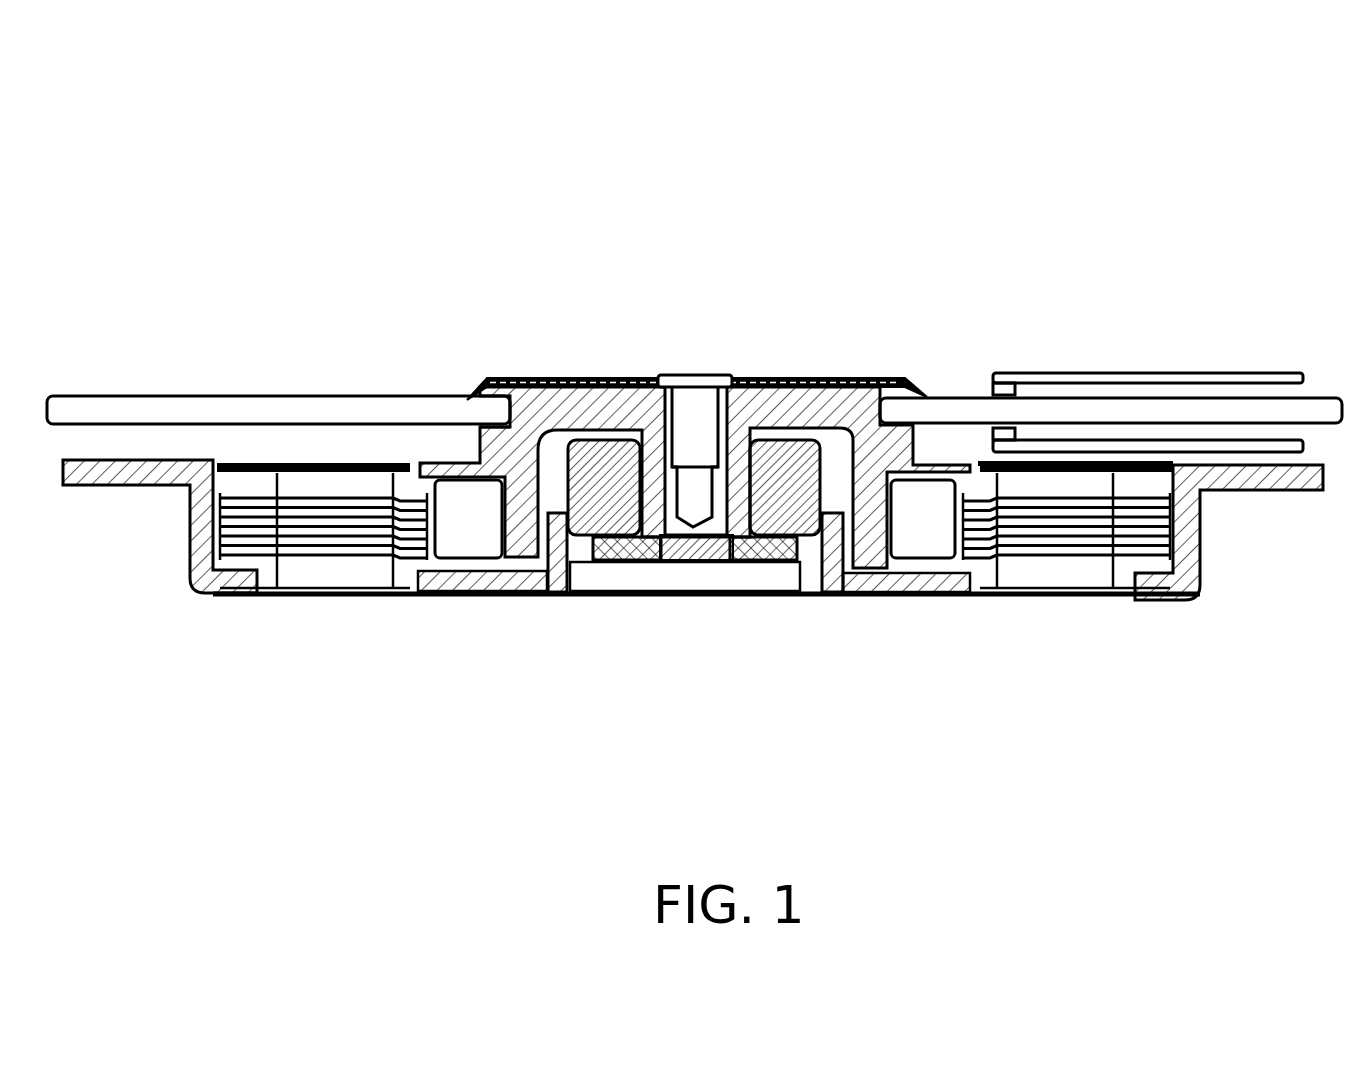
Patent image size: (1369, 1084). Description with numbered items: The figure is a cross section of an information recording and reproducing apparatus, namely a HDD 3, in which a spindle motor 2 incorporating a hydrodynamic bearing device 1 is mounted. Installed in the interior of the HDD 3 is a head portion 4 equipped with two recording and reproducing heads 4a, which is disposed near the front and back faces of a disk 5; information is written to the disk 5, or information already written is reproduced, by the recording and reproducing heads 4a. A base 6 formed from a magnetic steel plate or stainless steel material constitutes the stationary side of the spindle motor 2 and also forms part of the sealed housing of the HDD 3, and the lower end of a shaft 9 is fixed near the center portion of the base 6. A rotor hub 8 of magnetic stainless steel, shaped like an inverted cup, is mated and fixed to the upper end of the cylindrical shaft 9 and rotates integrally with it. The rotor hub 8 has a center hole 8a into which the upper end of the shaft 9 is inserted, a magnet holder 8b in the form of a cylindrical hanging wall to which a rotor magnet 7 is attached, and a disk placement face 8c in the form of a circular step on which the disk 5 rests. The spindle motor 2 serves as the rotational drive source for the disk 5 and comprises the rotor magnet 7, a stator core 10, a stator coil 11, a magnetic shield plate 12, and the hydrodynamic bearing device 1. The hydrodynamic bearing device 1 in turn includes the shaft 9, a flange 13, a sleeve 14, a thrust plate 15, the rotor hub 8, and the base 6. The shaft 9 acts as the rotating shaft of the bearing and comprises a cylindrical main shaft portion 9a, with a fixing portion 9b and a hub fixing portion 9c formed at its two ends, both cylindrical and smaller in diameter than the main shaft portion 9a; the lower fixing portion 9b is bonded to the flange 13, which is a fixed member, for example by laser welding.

The hydrodynamic bearing device 1 is at (722, 600).
The spindle motor 2 is at (1062, 626).
The HDD 3 is at (1192, 148).
The head portion 4 is at (1093, 383).
The recording and reproducing heads 4a is at (1005, 437).
The disk 5 is at (938, 398).
The base 6 is at (460, 598).
The rotor magnet 7 is at (905, 540).
The rotor hub 8 is at (570, 375).
The center hole 8a is at (632, 380).
The magnet holder 8b is at (850, 560).
The disk placement face 8c is at (895, 385).
The shaft 9 is at (693, 540).
The main shaft portion 9a is at (858, 380).
The fixing portion 9b is at (622, 547).
The hub fixing portion 9c is at (765, 378).
The stator core 10 is at (1137, 530).
The stator coil 11 is at (1030, 580).
The magnetic shield plate 12 is at (1120, 467).
The flange 13 is at (775, 548).
The sleeve 14 is at (597, 515).
The thrust plate 15 is at (795, 575).